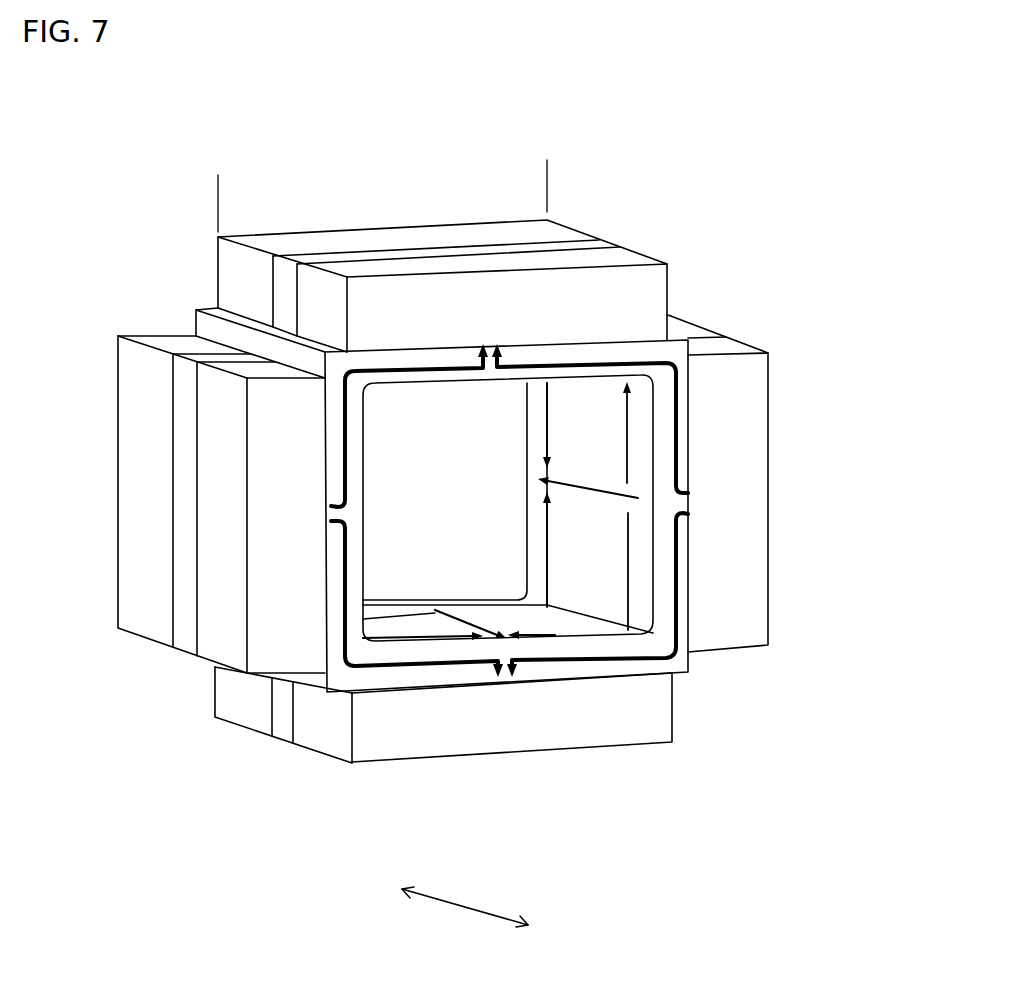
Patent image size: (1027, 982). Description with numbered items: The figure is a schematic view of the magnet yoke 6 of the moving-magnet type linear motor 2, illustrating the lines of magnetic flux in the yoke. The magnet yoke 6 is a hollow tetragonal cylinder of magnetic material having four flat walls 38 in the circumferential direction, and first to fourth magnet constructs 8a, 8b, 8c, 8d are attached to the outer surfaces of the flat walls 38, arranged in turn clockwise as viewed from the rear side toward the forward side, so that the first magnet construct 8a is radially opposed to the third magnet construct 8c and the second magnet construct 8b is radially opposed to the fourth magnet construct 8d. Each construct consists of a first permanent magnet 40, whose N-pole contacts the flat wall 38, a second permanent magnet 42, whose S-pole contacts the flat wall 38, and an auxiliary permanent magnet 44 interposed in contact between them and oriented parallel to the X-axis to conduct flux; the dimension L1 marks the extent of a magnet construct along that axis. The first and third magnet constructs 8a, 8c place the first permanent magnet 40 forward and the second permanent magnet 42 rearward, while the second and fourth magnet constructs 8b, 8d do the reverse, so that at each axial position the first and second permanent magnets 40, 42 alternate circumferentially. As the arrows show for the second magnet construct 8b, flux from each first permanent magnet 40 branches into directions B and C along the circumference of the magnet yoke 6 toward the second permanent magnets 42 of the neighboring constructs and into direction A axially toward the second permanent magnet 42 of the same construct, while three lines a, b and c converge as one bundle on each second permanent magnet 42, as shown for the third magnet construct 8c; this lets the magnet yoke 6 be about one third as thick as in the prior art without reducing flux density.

The linear motor 2 is at (186, 183).
The magnet yoke 6 is at (690, 668).
The flat wall 38 is at (682, 405).
The first permanent magnet 40 is at (340, 235).
The second permanent magnet 42 is at (605, 288).
The auxiliary permanent magnet 44 is at (277, 280).
The first magnet construct 8a is at (578, 198).
The second magnet construct 8b is at (786, 446).
The third magnet construct 8c is at (490, 772).
The fourth magnet construct 8d is at (90, 672).
The magnet length L1 is at (222, 198).